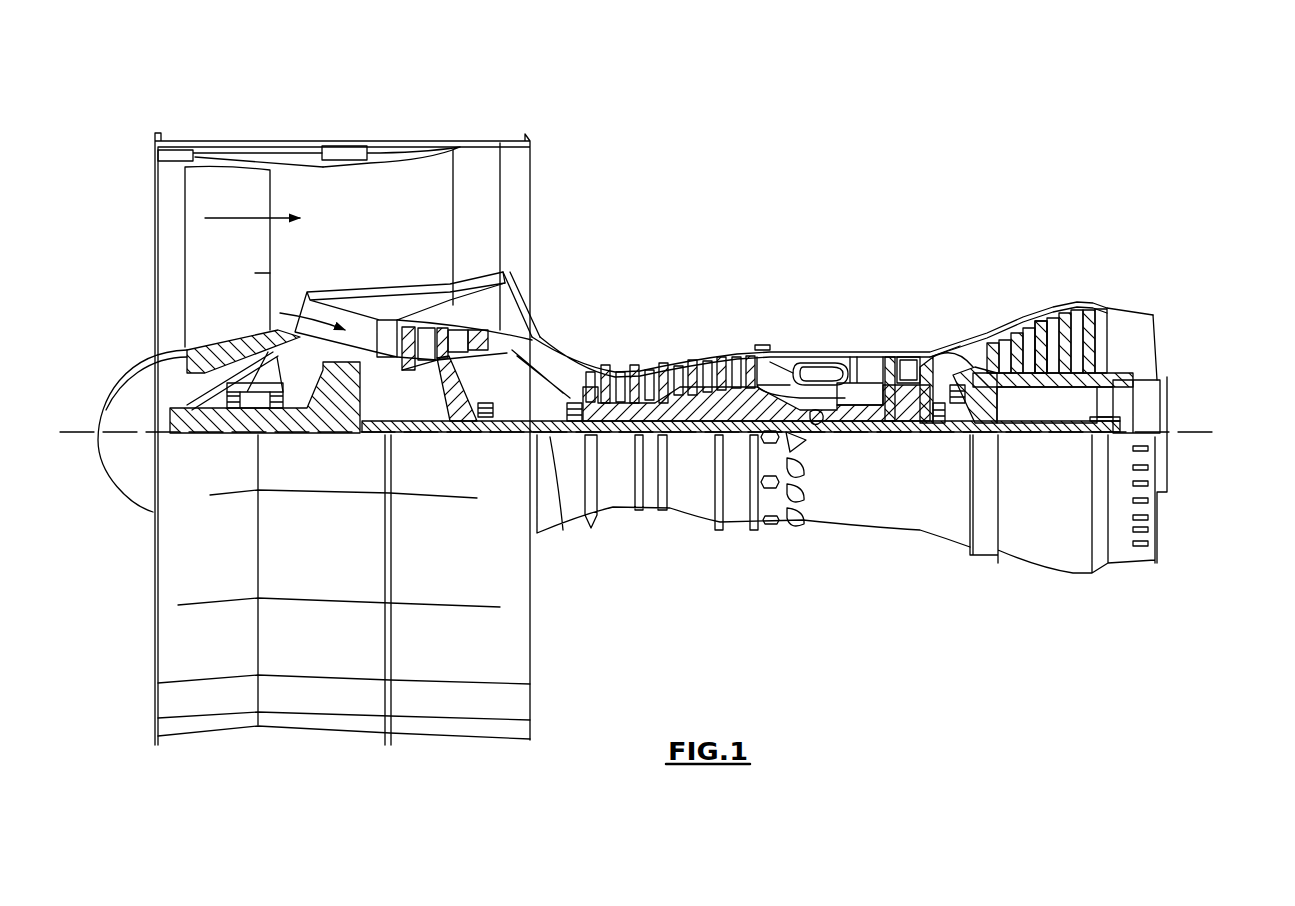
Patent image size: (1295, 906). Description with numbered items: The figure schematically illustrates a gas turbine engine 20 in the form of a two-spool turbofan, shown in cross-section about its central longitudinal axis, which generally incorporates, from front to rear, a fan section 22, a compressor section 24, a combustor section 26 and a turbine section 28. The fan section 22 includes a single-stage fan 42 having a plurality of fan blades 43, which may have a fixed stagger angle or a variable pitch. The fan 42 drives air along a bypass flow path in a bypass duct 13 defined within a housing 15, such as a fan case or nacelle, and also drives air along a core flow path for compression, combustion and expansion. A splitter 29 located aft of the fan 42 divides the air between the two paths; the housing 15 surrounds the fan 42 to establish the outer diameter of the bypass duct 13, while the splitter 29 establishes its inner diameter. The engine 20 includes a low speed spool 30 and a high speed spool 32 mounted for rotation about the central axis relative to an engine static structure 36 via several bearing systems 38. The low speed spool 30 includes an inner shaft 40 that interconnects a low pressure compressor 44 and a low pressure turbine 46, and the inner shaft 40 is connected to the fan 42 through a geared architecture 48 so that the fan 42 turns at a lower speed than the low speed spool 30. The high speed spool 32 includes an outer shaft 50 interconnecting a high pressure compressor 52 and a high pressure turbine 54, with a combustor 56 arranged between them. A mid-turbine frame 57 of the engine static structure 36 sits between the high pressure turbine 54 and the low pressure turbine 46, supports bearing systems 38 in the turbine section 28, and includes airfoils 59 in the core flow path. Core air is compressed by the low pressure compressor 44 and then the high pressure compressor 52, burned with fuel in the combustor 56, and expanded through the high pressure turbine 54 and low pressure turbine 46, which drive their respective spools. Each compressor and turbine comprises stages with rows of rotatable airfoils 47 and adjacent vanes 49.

The gas turbine engine 20 is at (778, 207).
The fan section 22 is at (268, 128).
The compressor section 24 is at (586, 338).
The combustor section 26 is at (813, 323).
The turbine section 28 is at (993, 288).
The bypass duct 13 is at (433, 168).
The housing 15 is at (345, 143).
The splitter 29 is at (330, 292).
The low speed spool 30 is at (693, 440).
The high speed spool 32 is at (737, 372).
The engine static structure 36 is at (733, 528).
The bearing systems 38 is at (953, 405).
The inner shaft 40 is at (548, 437).
The fan 42 is at (238, 272).
The fan blades 43 is at (257, 275).
The low pressure compressor 44 is at (447, 337).
The low pressure turbine 46 is at (1040, 318).
The rotatable airfoils 47 is at (407, 330).
The geared architecture 48 is at (352, 415).
The vanes 49 is at (427, 330).
The outer shaft 50 is at (818, 432).
The high pressure compressor 52 is at (673, 368).
The high pressure turbine 54 is at (892, 358).
The combustor 56 is at (812, 375).
The mid-turbine frame 57 is at (948, 346).
The airfoils 59 is at (988, 400).